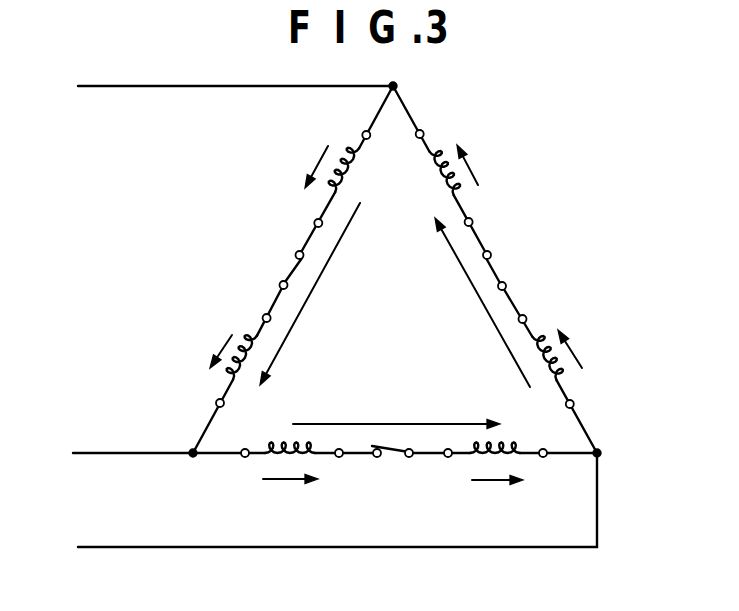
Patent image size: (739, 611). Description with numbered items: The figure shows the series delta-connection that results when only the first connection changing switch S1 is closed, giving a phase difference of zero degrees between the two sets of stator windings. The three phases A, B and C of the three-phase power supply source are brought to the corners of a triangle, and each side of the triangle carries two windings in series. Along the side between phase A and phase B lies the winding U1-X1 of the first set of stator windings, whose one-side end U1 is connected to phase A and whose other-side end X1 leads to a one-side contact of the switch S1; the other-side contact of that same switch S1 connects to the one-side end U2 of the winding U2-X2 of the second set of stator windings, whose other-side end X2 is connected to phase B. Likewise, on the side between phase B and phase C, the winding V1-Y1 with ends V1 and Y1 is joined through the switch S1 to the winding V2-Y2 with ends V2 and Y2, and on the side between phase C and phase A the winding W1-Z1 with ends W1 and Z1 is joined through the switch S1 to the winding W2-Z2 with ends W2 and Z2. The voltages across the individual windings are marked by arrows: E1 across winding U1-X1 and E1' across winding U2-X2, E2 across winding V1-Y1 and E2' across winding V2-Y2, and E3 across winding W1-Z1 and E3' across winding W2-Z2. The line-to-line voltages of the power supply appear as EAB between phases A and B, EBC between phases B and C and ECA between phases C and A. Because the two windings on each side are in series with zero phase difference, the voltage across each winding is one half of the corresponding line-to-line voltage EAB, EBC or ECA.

The phase B of the three-phase power supply source B is at (224, 84).
The phase A of the three-phase power supply source A is at (120, 454).
The phase C of the three-phase power supply source C is at (325, 510).
The other-side end of stator winding X2 is at (349, 126).
The one-side end of stator winding U2 is at (298, 216).
The other-side end of stator winding X1 is at (249, 310).
The one-side end of stator winding U1 is at (202, 401).
The one-side end of stator winding V1 is at (435, 126).
The other-side end of stator winding Y1 is at (483, 215).
The one-side end of stator winding V2 is at (539, 310).
The other-side end of stator winding Y2 is at (587, 410).
The other-side end of stator winding Z2 is at (237, 469).
The one-side end of stator winding W2 is at (343, 469).
The other-side end of stator winding Z1 is at (449, 468).
The one-side end of stator winding W1 is at (554, 468).
The first connection changing switch S1 is at (398, 368).
The voltage across winding U1-X1 E1 is at (212, 350).
The voltage across winding U2-X2 E1' is at (308, 167).
The voltage across winding V1-Y1 E2 is at (477, 165).
The voltage across winding V2-Y2 E2' is at (583, 348).
The voltage across winding W1-Z1 E3 is at (497, 495).
The voltage across winding W2-Z2 E3' is at (290, 494).
The line-to-line voltage between phases A and B EAB is at (310, 294).
The line-to-line voltage between phases B and C EBC is at (482, 302).
The line-to-line voltage between phases C and A ECA is at (396, 413).